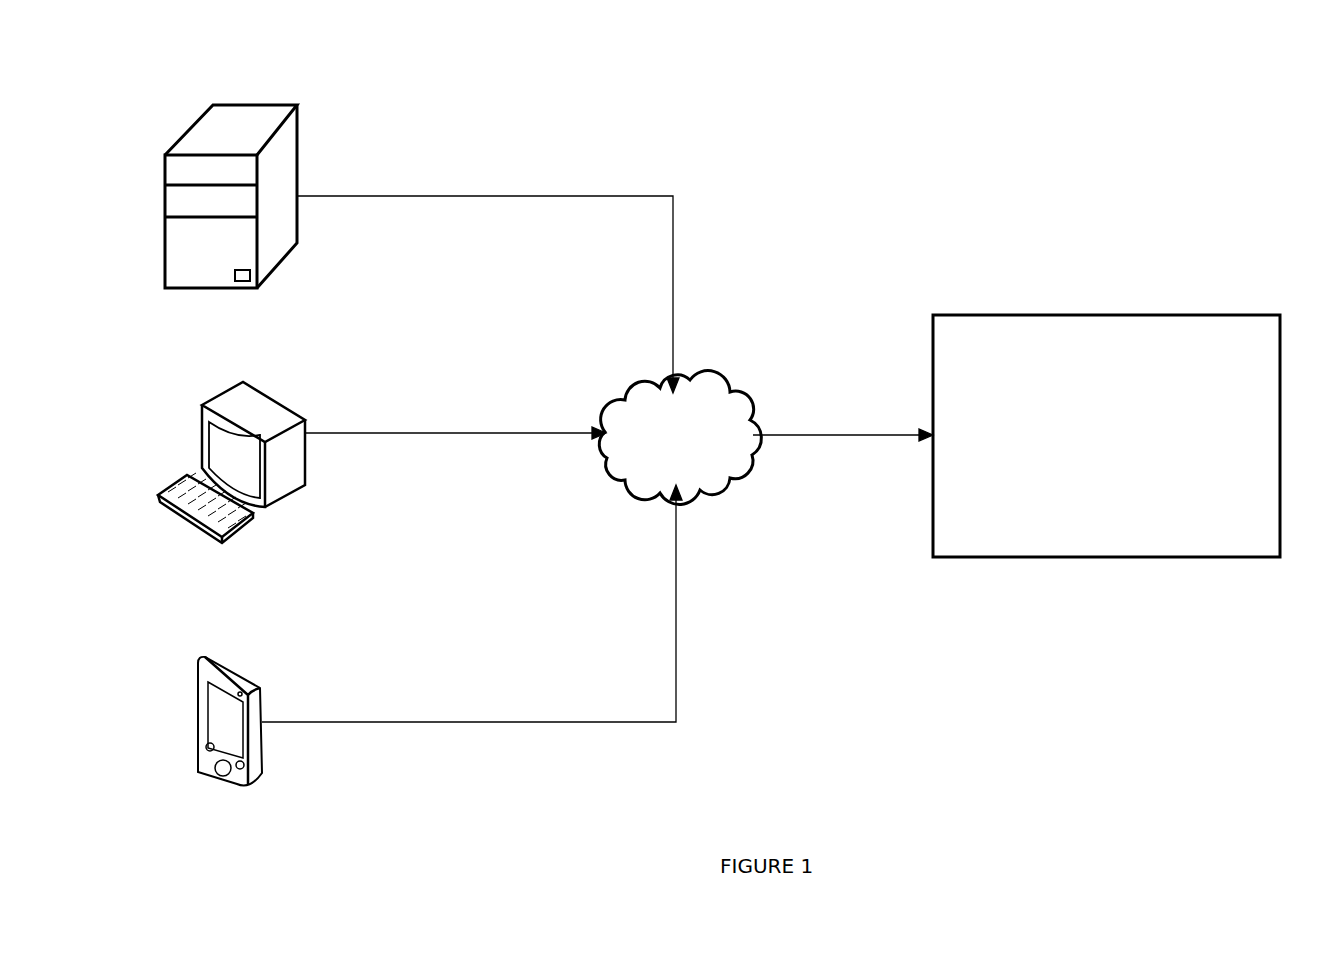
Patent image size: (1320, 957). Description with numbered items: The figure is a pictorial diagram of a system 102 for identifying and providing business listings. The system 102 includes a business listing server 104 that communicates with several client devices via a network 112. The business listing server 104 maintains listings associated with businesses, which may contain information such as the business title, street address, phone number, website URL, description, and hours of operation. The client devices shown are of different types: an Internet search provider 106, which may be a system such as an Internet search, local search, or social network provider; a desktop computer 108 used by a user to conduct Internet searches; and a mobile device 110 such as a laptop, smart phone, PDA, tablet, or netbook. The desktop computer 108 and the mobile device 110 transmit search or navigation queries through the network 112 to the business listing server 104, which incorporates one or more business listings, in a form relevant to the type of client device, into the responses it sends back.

The system 102 is at (968, 126).
The business listing server 104 is at (1262, 343).
The Internet search provider 106 is at (278, 104).
The desktop computer 108 is at (276, 405).
The mobile device 110 is at (248, 672).
The network 112 is at (665, 455).